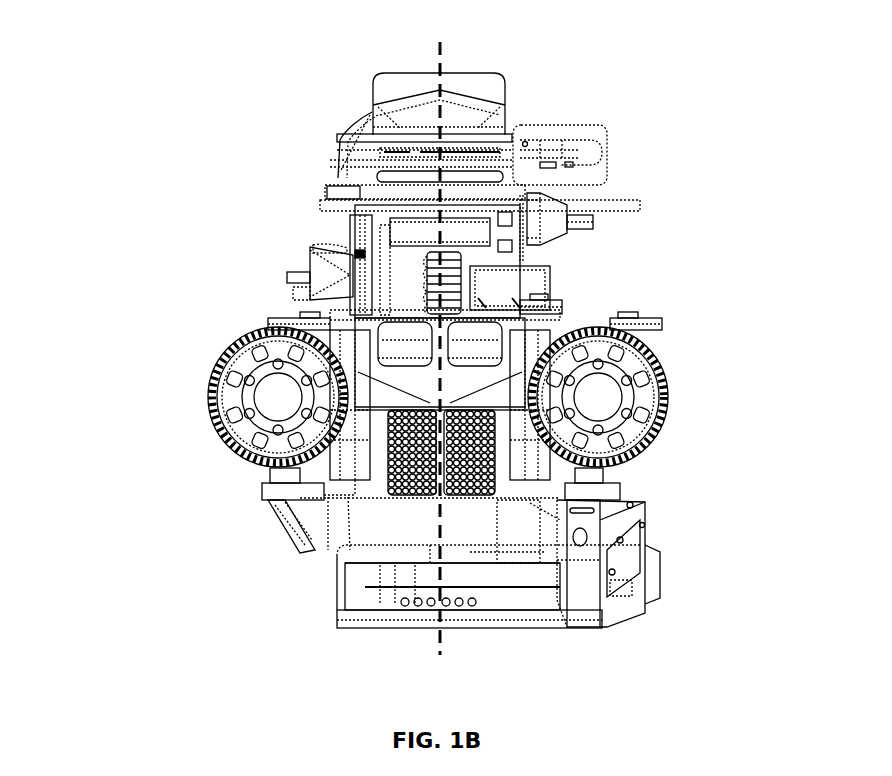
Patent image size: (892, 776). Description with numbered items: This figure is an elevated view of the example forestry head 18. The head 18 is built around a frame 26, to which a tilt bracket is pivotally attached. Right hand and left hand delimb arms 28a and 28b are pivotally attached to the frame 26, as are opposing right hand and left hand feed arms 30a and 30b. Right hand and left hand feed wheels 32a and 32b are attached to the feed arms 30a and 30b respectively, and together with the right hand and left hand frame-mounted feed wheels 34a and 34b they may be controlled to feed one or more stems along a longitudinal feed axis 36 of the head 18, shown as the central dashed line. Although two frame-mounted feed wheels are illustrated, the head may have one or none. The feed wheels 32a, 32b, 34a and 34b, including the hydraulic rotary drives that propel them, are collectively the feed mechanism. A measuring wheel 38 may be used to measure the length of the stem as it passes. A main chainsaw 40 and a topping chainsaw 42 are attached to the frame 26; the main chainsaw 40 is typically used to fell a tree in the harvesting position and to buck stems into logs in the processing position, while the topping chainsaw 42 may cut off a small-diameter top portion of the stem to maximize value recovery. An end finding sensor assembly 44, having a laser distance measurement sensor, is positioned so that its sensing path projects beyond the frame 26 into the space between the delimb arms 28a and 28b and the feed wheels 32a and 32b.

The head 18 is at (110, 106).
The longitudinal feed axis 36 is at (442, 47).
The topping chainsaw 42 is at (565, 150).
The right hand delimb arm 28a is at (297, 272).
The left hand delimb arm 28b is at (595, 222).
The measuring wheel 38 is at (465, 282).
The end finding sensor assembly 44 is at (550, 304).
The right hand feed arm 30a is at (277, 318).
The left hand feed arm 30b is at (600, 322).
The right hand feed wheel 32a is at (207, 397).
The left hand feed wheel 32b is at (652, 340).
The right hand frame-mounted feed wheel 34a is at (408, 493).
The left hand frame-mounted feed wheel 34b is at (475, 492).
The main chainsaw 40 is at (485, 587).
The frame 26 is at (663, 500).